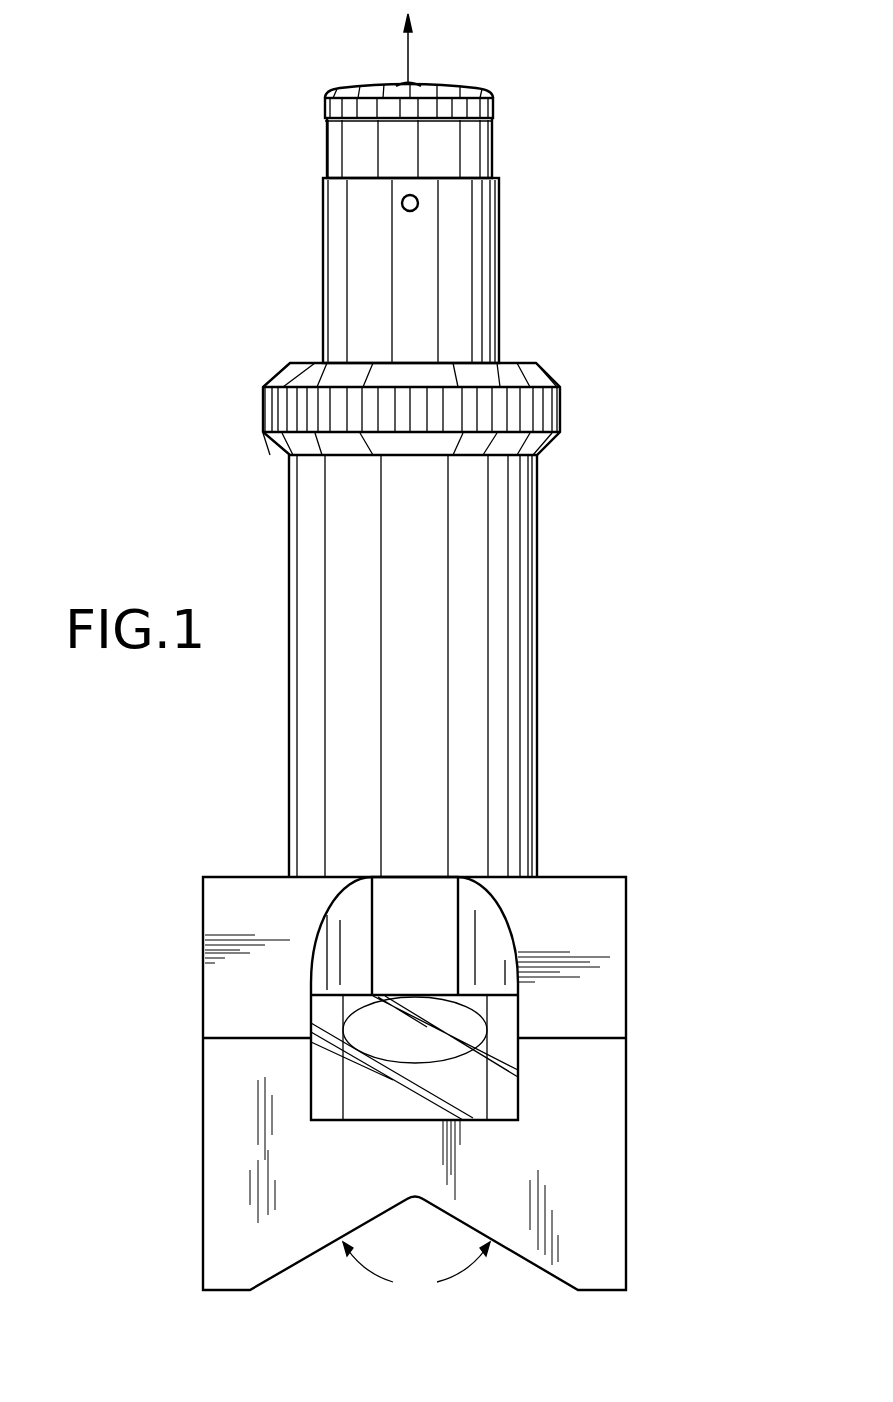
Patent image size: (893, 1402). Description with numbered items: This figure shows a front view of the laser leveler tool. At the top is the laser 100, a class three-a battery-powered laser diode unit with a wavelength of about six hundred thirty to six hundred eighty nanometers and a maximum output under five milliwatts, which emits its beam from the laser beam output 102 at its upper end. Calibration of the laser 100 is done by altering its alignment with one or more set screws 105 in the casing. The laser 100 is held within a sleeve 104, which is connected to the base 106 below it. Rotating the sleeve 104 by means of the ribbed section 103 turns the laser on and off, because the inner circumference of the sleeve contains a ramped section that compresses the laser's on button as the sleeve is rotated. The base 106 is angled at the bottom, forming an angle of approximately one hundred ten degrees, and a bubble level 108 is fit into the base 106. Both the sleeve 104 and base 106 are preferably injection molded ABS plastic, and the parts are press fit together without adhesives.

The laser 100 is at (323, 260).
The laser beam output 102 is at (403, 84).
The ribbed section 103 is at (560, 408).
The sleeve 104 is at (537, 630).
The set screw 105 is at (418, 207).
The base 106 is at (203, 1058).
The bubble level 108 is at (518, 1073).